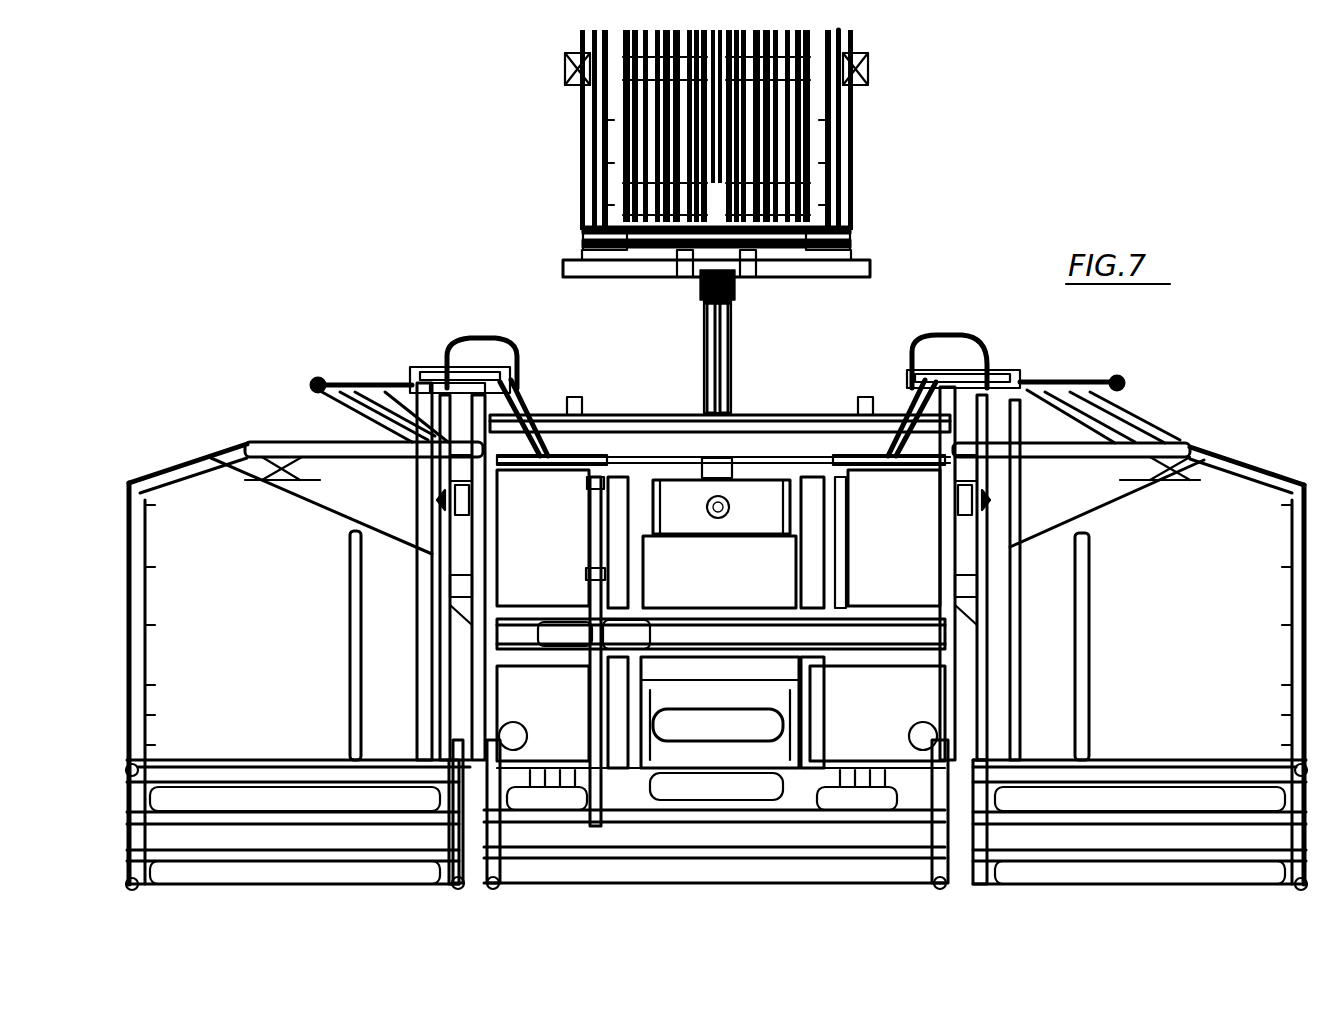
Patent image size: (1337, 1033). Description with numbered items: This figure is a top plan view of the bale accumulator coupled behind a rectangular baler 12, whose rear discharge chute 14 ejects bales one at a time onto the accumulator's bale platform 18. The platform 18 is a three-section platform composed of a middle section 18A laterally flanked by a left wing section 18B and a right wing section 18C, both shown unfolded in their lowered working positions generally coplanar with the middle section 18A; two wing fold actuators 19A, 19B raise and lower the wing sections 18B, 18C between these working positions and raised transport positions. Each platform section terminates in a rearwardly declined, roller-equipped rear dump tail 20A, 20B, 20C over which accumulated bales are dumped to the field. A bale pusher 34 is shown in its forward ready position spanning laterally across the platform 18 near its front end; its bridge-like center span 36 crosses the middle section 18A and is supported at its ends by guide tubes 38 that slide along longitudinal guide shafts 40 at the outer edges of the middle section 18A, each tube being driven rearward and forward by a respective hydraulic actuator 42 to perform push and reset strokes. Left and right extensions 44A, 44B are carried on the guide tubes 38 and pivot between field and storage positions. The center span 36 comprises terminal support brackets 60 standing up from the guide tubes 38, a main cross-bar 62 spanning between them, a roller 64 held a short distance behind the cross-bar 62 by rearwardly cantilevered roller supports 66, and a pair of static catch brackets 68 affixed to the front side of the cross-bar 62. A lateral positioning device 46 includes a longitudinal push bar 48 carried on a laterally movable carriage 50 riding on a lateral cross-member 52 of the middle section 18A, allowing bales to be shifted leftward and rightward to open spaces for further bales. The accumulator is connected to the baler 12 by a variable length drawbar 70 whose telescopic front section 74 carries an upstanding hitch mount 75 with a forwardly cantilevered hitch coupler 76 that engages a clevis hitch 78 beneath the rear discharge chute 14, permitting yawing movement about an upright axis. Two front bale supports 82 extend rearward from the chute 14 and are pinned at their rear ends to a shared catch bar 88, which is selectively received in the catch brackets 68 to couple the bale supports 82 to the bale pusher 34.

The rectangular baler 12 is at (556, 165).
The rear discharge chute 14 is at (840, 197).
The bale platform 18 is at (1240, 488).
The middle section 18A is at (745, 594).
The left wing section 18B is at (290, 659).
The right wing section 18C is at (1215, 632).
The wing fold actuator 19A is at (463, 356).
The wing fold actuator 19B is at (952, 362).
The rear dump tail 20A is at (718, 872).
The rear dump tail 20B is at (275, 884).
The rear dump tail 20C is at (1134, 884).
The bale pusher 34 is at (583, 466).
The center span 36 is at (618, 412).
The guide tube 38 is at (430, 549).
The guide shaft 40 is at (448, 588).
The hydraulic actuator 42 is at (436, 496).
The left extension 44A is at (283, 440).
The right extension 44B is at (1183, 448).
The lateral positioning device 46 is at (584, 556).
The push bar 48 is at (585, 580).
The carriage 50 is at (556, 642).
The lateral cross-member 52 is at (896, 650).
The terminal support bracket 60 is at (512, 396).
The main cross-bar 62 is at (828, 414).
The roller 64 is at (884, 470).
The roller support 66 is at (528, 474).
The catch bracket 68 is at (575, 396).
The variable length drawbar 70 is at (730, 370).
The front section 74 is at (730, 392).
The hitch mount 75 is at (710, 304).
The hitch coupler 76 is at (733, 286).
The hitch 78 is at (700, 290).
The bale support 82 is at (681, 270).
The catch bar 88 is at (800, 272).